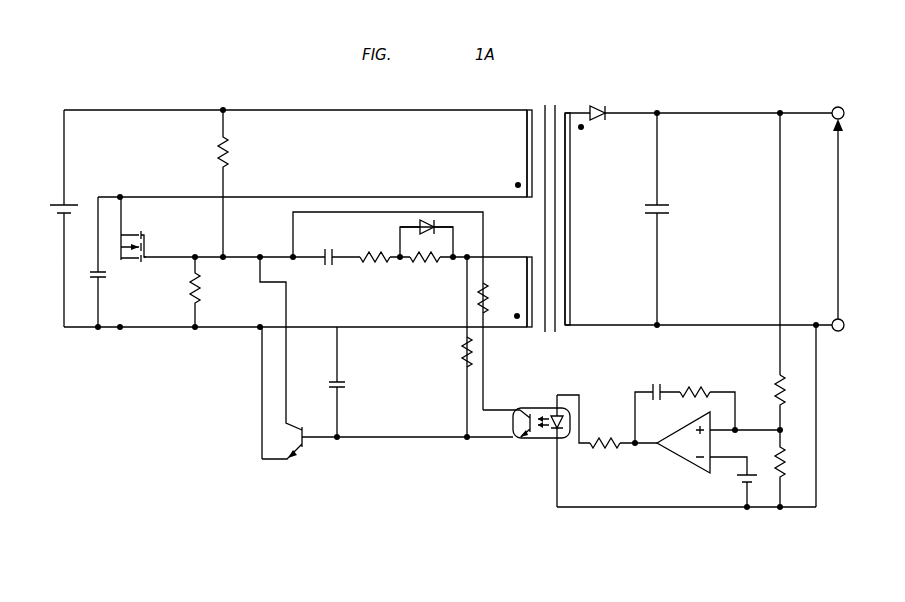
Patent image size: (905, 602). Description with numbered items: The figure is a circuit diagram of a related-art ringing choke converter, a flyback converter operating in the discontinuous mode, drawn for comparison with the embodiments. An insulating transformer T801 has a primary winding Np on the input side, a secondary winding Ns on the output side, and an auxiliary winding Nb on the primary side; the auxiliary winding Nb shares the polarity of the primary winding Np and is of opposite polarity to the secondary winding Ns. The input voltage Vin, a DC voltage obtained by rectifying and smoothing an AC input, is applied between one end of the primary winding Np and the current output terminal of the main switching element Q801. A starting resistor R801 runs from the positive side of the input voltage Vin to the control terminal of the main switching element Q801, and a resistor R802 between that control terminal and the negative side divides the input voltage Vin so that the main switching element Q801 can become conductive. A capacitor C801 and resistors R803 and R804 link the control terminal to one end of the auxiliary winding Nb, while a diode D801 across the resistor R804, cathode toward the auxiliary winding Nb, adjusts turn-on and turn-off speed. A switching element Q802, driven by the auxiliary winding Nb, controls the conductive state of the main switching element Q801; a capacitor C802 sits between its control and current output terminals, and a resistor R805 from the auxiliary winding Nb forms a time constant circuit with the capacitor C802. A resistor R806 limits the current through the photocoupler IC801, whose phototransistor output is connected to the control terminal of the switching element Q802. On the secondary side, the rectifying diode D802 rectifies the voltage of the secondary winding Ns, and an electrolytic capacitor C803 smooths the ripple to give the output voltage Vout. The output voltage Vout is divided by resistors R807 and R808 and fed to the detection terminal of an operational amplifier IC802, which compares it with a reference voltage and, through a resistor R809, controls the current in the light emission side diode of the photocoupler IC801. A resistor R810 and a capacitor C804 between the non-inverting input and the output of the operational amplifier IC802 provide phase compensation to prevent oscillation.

The input voltage Vin is at (55, 200).
The output voltage Vout is at (820, 219).
The insulating transformer T801 is at (549, 209).
The primary winding Np is at (512, 153).
The secondary winding Ns is at (581, 219).
The auxiliary winding Nb is at (512, 292).
The main switching element Q801 is at (144, 236).
The switching element Q802 is at (299, 450).
The starting resistor R801 is at (246, 183).
The resistor R802 is at (171, 292).
The resistor R803 is at (371, 246).
The resistor R804 is at (426, 271).
The resistor R805 is at (442, 352).
The resistor R806 is at (487, 304).
The resistor R807 is at (790, 393).
The resistor R808 is at (777, 478).
The resistor R809 is at (602, 456).
The resistor R810 is at (700, 380).
The capacitor C801 is at (327, 271).
The capacitor C802 is at (359, 386).
The electrolytic capacitor C803 is at (680, 212).
The capacitor C804 is at (84, 285).
The diode D801 is at (432, 222).
The rectifying diode D802 is at (613, 128).
The photocoupler IC801 is at (526, 451).
The operational amplifier IC802 is at (698, 451).